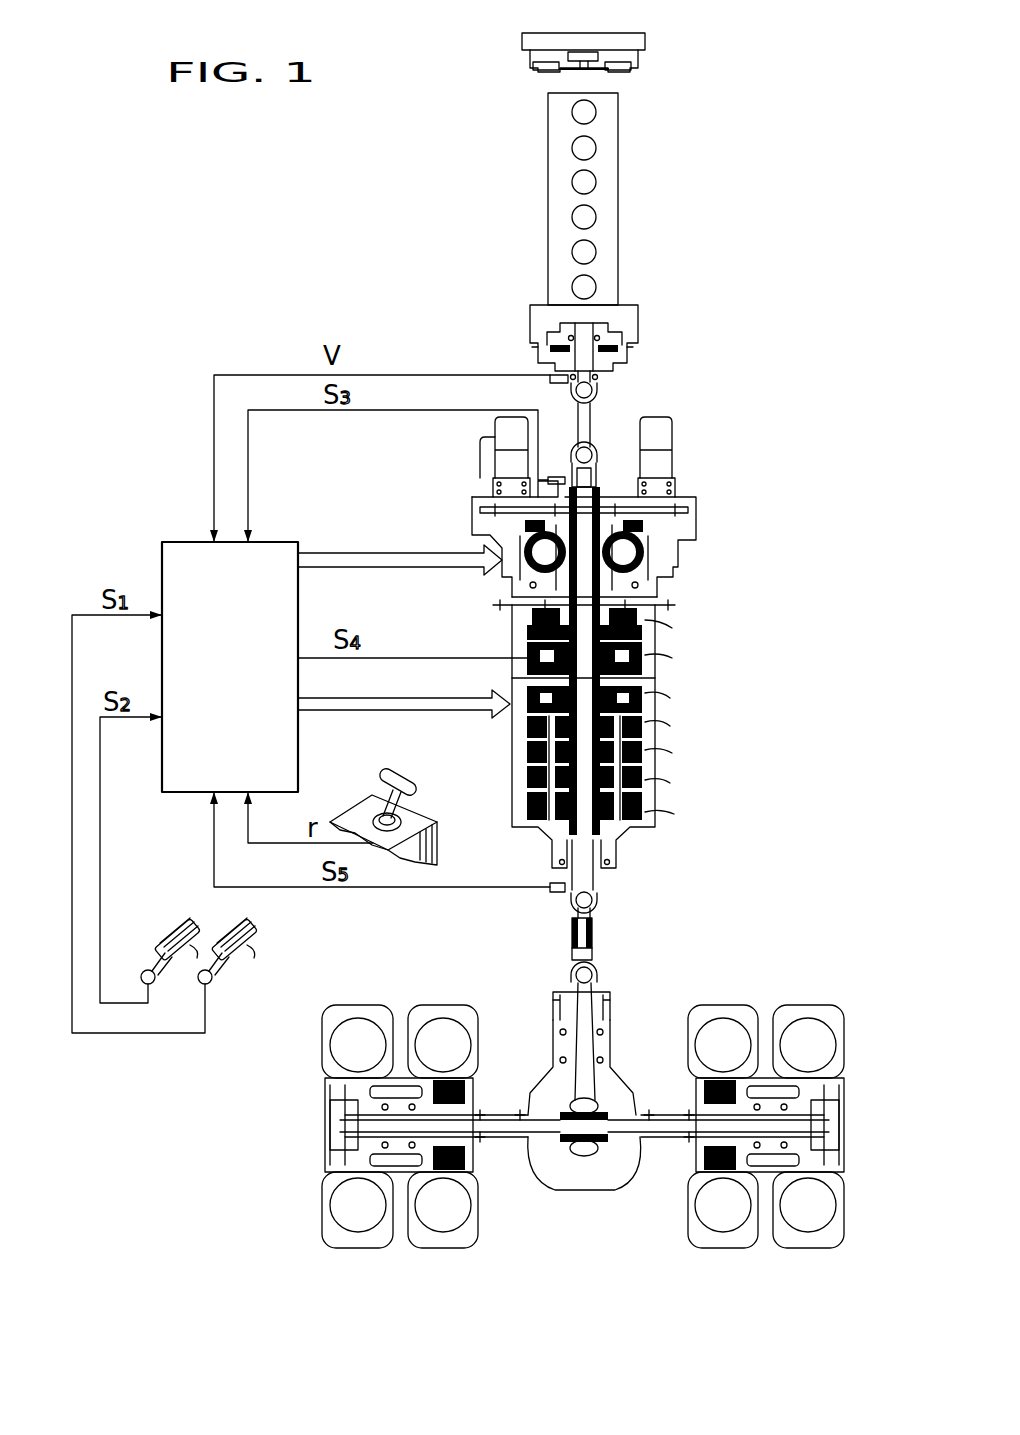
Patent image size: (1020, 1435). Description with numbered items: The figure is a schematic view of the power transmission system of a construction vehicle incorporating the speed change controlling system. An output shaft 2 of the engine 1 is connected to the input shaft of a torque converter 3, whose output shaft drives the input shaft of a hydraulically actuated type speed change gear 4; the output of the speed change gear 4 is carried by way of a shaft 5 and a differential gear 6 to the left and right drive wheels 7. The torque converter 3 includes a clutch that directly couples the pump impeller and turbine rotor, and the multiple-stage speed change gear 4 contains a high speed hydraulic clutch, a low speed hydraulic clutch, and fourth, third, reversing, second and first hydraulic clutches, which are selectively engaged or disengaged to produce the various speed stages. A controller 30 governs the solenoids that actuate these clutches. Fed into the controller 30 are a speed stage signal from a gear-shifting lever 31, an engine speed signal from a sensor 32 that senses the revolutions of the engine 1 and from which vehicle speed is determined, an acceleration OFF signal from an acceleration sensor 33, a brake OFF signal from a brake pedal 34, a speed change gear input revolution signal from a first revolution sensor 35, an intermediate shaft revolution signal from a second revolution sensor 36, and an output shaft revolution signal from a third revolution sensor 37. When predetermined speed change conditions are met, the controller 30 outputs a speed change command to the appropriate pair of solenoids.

The engine 1 is at (602, 193).
The output shaft 2 is at (595, 378).
The torque converter 3 is at (678, 522).
The hydraulically actuated type speed change gear 4 is at (504, 733).
The shaft 5 is at (595, 936).
The differential 6 is at (606, 1099).
The drive wheels 7 is at (418, 1016).
The controller 30 is at (281, 542).
The gear-shifting lever 31 is at (412, 786).
The sensor 32 is at (549, 376).
The acceleration sensor 33 is at (232, 925).
The brake pedal 34 is at (175, 925).
The first revolution sensor 35 is at (556, 476).
The second revolution sensor 36 is at (527, 645).
The third revolution sensor 37 is at (548, 892).